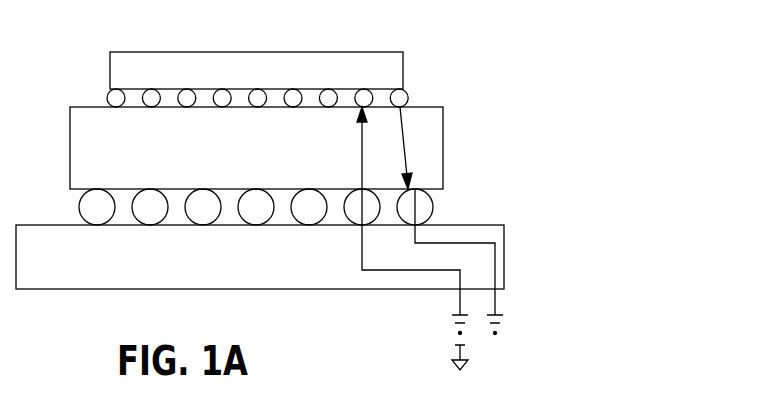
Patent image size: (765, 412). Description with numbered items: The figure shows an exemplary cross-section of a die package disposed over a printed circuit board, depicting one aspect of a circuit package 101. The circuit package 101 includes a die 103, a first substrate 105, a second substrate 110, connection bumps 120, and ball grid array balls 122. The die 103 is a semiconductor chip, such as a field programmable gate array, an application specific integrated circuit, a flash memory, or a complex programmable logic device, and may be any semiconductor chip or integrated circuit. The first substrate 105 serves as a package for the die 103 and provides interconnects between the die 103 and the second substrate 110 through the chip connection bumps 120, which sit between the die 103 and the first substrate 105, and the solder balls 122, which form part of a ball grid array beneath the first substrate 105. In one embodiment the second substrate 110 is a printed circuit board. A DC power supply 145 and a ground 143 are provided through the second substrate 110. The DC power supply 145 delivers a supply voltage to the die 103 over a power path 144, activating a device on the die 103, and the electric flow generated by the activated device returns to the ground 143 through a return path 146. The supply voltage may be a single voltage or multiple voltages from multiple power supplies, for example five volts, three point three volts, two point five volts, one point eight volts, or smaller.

The circuit package 101 is at (578, 61).
The die 103 is at (397, 63).
The connection bumps 120 is at (409, 97).
The first substrate 105 is at (443, 127).
The ball grid array ball 122 is at (433, 207).
The second substrate 110 is at (505, 255).
The power path 144 is at (358, 155).
The return path 146 is at (407, 145).
The DC power supply 145 is at (452, 337).
The ground 143 is at (510, 320).